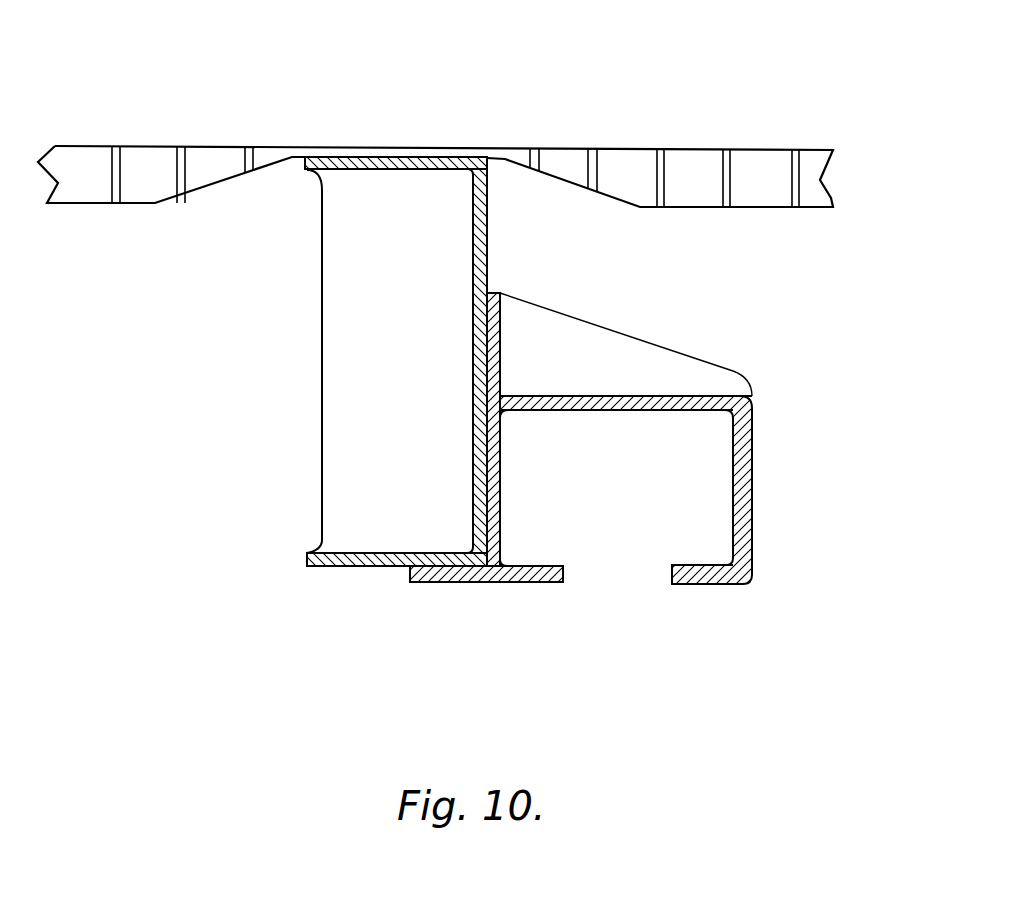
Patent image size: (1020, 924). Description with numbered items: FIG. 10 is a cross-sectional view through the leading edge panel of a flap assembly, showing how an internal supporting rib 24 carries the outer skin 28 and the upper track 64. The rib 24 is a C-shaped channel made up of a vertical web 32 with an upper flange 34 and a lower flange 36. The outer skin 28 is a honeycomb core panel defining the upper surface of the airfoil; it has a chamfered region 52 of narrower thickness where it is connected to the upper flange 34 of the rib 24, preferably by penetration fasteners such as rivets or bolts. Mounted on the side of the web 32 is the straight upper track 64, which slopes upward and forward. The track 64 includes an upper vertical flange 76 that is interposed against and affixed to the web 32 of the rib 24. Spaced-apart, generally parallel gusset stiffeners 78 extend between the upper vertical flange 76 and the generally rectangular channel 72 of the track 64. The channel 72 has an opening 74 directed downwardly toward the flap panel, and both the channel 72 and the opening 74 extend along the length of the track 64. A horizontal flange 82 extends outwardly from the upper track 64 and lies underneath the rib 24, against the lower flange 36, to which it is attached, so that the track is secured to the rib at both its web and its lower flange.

The outer skin 28 is at (753, 160).
The rib 24 is at (416, 302).
The chamfered region 52 is at (493, 148).
The vertical web 32 is at (487, 232).
The upper flange 34 is at (370, 169).
The lower flange 36 is at (383, 547).
The upper track 64 is at (641, 501).
The upper vertical flange 76 is at (498, 348).
The gusset stiffener 78 is at (582, 384).
The rectangular channel 72 is at (702, 533).
The horizontal flange 82 is at (452, 583).
The opening 74 is at (615, 606).